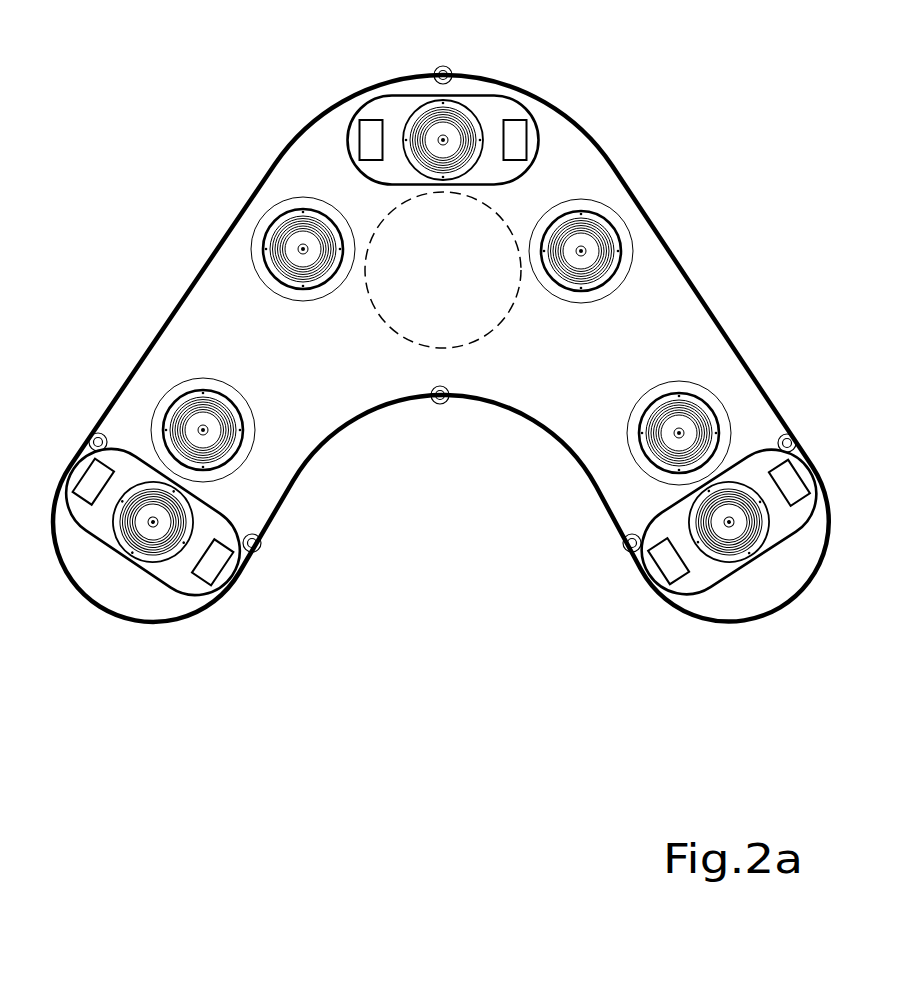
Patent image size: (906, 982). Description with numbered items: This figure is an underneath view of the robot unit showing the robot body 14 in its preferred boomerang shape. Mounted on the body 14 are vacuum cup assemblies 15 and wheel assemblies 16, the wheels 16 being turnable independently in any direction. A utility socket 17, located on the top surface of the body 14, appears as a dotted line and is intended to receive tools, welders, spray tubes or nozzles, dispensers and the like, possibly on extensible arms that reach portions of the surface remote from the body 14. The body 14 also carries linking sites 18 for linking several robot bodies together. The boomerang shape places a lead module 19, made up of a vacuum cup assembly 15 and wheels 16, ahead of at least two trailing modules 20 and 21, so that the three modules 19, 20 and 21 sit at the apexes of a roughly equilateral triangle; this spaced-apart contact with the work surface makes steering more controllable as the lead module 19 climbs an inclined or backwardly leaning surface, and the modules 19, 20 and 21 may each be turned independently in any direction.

The robot body 14 is at (660, 322).
The vacuum cup assembly 15 is at (262, 262).
The wheel assembly 16 is at (527, 135).
The utility socket 17 is at (487, 336).
The linking site 18 is at (449, 70).
The lead module 19 is at (395, 105).
The trailing module 20 is at (100, 528).
The trailing module 21 is at (707, 578).